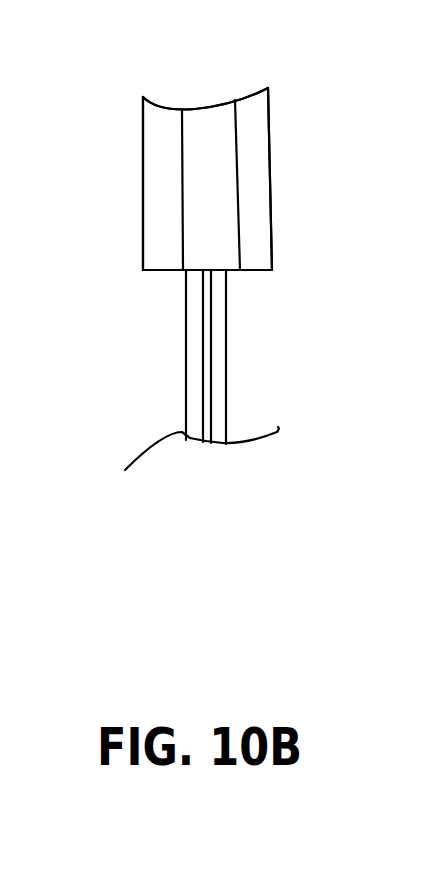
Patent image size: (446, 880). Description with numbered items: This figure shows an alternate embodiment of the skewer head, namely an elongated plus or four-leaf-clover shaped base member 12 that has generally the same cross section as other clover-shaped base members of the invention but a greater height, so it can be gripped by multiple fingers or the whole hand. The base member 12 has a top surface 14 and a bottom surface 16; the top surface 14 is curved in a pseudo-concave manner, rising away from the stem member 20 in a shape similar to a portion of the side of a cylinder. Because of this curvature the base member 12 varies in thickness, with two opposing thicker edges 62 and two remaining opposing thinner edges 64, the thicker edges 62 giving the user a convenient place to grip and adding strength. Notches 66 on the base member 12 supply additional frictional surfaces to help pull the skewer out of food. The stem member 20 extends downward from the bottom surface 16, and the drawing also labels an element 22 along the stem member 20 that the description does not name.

The base member 12 is at (268, 197).
The top surface 14 is at (172, 108).
The bottom surface 16 is at (152, 270).
The stem member 20 is at (228, 360).
The handle strips 22 is at (208, 406).
The thicker edges 62 is at (137, 133).
The thinner edges 64 is at (213, 143).
The notches 66 is at (170, 173).